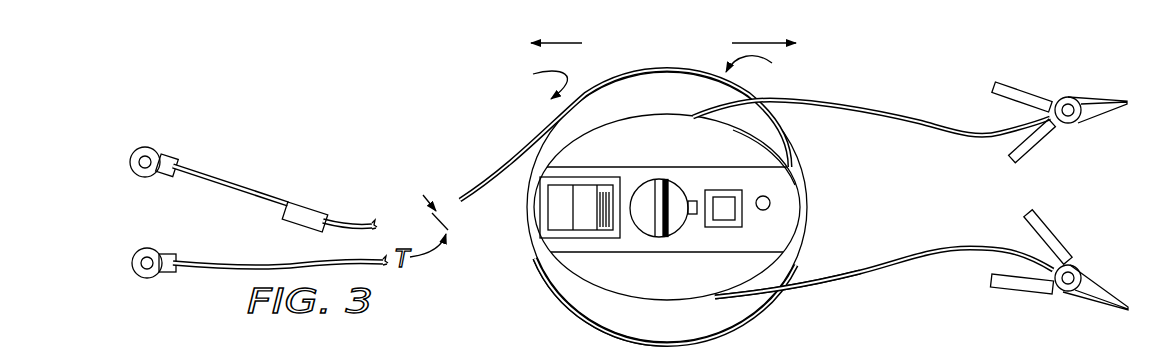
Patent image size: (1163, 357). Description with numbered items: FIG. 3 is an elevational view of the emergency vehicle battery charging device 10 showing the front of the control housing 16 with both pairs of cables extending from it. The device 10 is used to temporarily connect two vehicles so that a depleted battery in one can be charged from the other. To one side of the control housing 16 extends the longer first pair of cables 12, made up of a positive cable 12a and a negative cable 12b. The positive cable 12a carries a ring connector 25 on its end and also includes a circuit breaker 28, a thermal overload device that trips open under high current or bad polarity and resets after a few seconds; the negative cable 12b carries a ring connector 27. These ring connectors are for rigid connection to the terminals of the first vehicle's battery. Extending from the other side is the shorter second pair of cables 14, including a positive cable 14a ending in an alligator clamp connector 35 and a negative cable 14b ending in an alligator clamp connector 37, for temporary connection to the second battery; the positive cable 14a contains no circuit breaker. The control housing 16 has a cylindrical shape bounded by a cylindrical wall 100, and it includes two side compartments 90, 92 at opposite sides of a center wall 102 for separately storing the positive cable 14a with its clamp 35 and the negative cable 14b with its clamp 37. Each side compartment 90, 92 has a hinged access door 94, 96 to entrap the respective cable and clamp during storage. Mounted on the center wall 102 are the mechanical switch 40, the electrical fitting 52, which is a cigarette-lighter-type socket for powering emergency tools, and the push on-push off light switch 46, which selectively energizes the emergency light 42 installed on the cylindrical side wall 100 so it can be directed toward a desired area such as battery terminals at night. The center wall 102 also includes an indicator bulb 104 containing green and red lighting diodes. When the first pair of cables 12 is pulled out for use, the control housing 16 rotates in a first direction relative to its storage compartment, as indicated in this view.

The vehicle battery charging device 10 is at (862, 74).
The first pair of cables 12 is at (503, 167).
The positive cable 12a is at (217, 180).
The negative cable 12b is at (200, 258).
The second pair of cables 14 is at (1049, 164).
The positive cable 14a is at (880, 112).
The negative cable 14b is at (957, 247).
The control housing 16 is at (809, 306).
The ring connector 25 is at (143, 148).
The ring connector 27 is at (150, 248).
The circuit breaker 28 is at (311, 212).
The alligator clamp connector 35 is at (1085, 97).
The alligator clamp connector 37 is at (1097, 287).
The mechanical switch 40 is at (547, 213).
The emergency light 42 is at (808, 199).
The push on-push off switch 46 is at (743, 220).
The electrical fitting 52 is at (647, 230).
The side compartment 90 is at (586, 122).
The side compartment 92 is at (705, 308).
The hinged access door 94 is at (705, 132).
The hinged access door 96 is at (603, 282).
The cylindrical wall 100 is at (823, 282).
The center wall 102 is at (763, 240).
The indicator bulb 104 is at (766, 197).